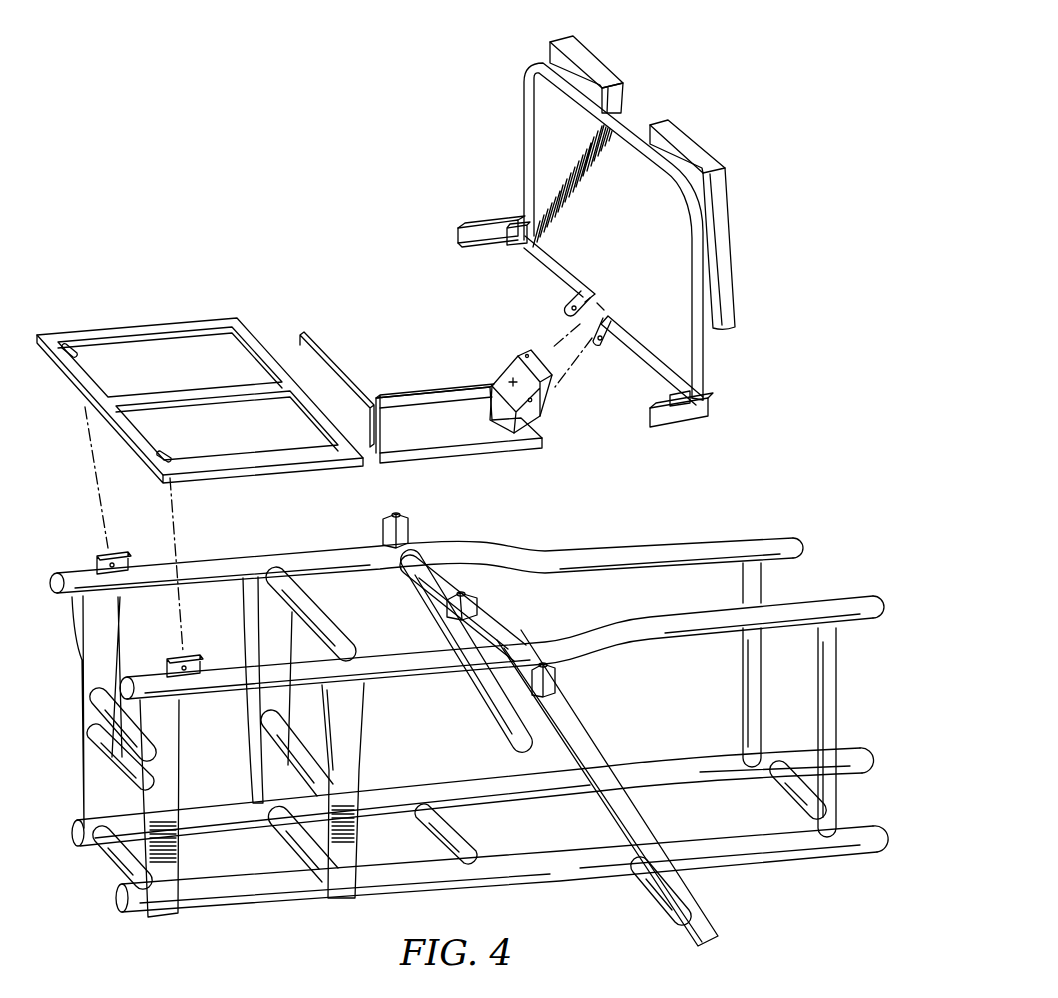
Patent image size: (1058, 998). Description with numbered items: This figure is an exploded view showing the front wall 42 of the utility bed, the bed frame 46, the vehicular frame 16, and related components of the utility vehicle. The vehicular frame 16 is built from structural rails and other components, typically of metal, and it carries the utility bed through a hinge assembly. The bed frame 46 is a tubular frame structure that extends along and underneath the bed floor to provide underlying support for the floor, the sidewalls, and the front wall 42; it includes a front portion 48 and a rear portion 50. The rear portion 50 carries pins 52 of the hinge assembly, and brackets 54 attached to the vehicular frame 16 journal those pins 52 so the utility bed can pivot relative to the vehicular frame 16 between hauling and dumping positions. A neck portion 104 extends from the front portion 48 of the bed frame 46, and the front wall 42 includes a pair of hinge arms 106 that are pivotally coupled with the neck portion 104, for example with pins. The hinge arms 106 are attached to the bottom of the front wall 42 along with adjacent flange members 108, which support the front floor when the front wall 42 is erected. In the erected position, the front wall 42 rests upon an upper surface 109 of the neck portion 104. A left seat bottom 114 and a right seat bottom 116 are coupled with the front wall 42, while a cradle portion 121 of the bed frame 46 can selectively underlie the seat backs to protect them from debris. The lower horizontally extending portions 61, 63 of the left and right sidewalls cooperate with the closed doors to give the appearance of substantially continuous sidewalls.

The vehicular frame 16 is at (469, 739).
The front wall 42 is at (637, 129).
The bed frame 46 is at (321, 437).
The front portion 48 is at (475, 382).
The rear portion 50 is at (77, 395).
The pins 52 is at (78, 354).
The brackets 54 is at (134, 558).
The lower horizontally extending portion 61 is at (474, 238).
The lower horizontally extending portion 63 is at (672, 419).
The neck portion 104 is at (553, 353).
The hinge arms 106 is at (569, 305).
The flange members 108 is at (568, 271).
The upper surface 109 is at (527, 355).
The left seat bottom 114 is at (589, 61).
The right seat bottom 116 is at (688, 146).
The cradle portion 121 is at (459, 461).